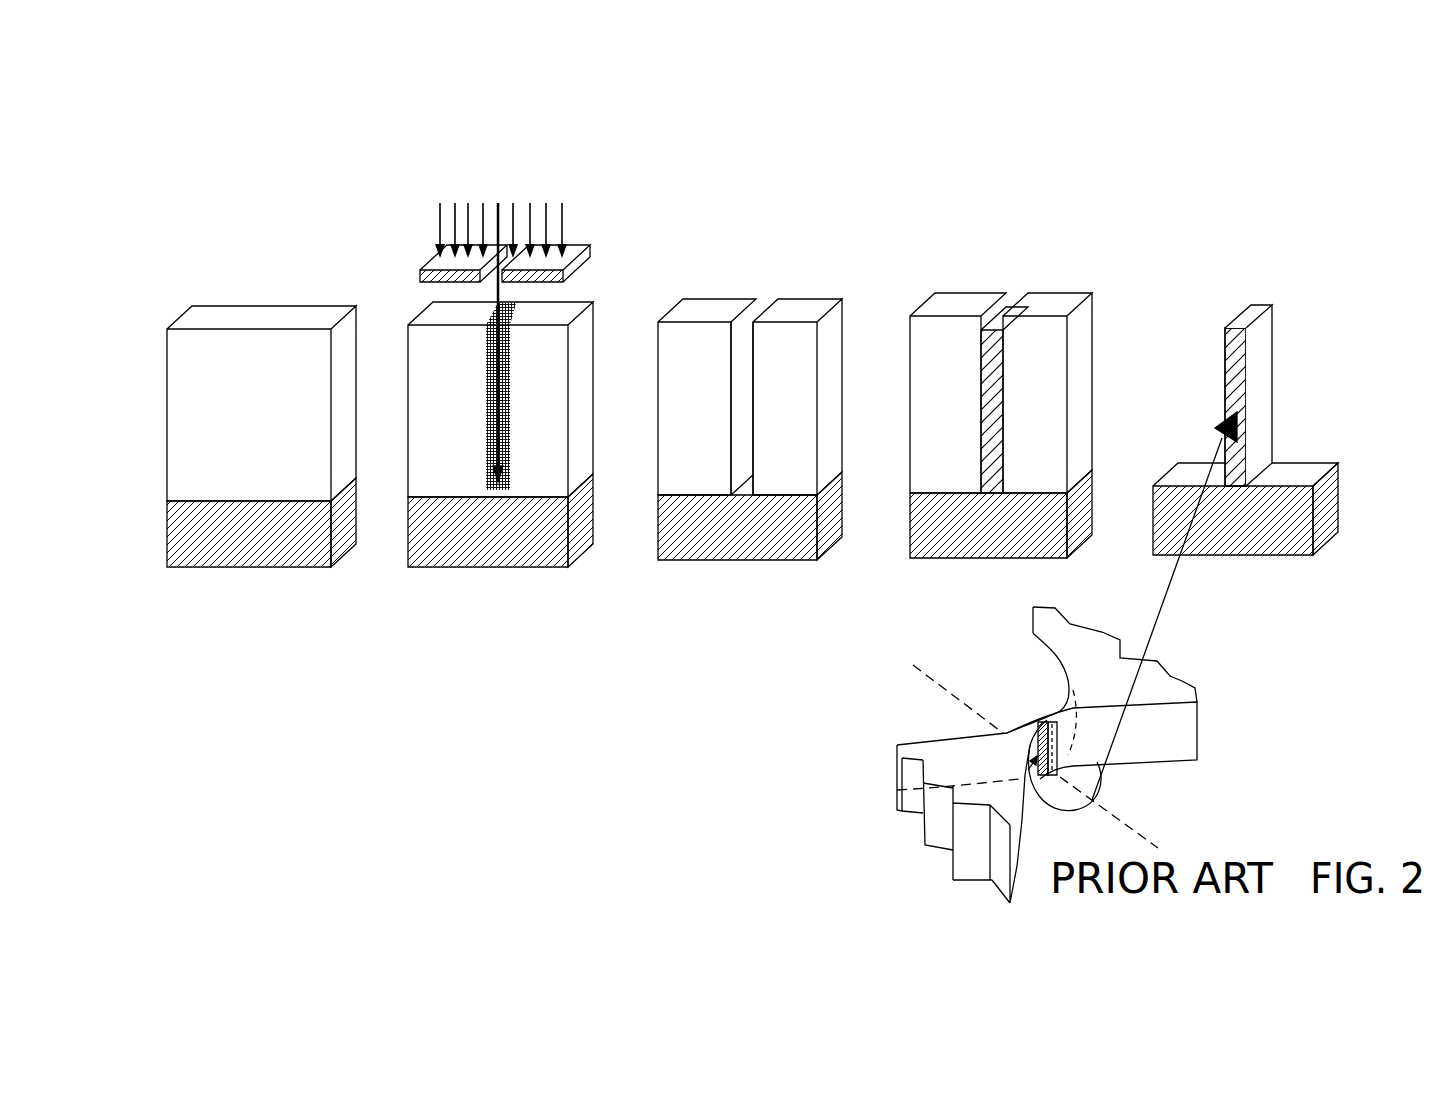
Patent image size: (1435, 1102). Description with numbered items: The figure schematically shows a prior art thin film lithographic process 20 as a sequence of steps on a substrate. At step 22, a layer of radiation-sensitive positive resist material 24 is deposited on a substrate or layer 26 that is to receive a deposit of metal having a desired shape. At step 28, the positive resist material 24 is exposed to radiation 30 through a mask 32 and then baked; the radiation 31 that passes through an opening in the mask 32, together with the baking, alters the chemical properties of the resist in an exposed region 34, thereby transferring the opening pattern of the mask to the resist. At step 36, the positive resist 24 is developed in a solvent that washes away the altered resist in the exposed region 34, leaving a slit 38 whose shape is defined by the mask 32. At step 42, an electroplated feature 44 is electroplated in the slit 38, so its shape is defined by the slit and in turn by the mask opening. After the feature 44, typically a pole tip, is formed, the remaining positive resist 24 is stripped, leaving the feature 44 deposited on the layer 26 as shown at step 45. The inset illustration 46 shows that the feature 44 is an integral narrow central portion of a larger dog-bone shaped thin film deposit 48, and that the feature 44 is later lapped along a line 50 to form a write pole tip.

The thin film lithographic process 20 is at (251, 83).
The step 22 is at (248, 168).
The positive resist material 24 is at (1051, 452).
The substrate or layer 26 is at (1257, 538).
The step 28 is at (490, 160).
The radiation 30 is at (566, 217).
The radiation 31 is at (498, 293).
The mask 32 is at (591, 246).
The exposed region 34 is at (500, 348).
The step 36 is at (740, 160).
The slit 38 is at (746, 337).
The step 42 is at (988, 158).
The electroplated feature 44 is at (1000, 325).
The step 45 is at (1213, 136).
The inset illustration 46 is at (840, 706).
The thin film deposit 48 is at (1157, 672).
The line 50 is at (927, 681).